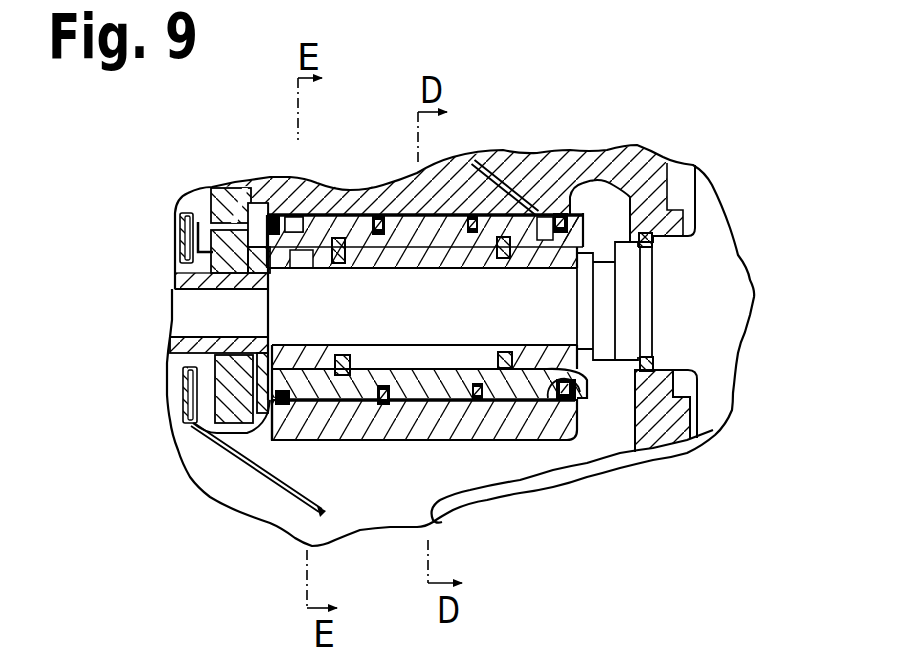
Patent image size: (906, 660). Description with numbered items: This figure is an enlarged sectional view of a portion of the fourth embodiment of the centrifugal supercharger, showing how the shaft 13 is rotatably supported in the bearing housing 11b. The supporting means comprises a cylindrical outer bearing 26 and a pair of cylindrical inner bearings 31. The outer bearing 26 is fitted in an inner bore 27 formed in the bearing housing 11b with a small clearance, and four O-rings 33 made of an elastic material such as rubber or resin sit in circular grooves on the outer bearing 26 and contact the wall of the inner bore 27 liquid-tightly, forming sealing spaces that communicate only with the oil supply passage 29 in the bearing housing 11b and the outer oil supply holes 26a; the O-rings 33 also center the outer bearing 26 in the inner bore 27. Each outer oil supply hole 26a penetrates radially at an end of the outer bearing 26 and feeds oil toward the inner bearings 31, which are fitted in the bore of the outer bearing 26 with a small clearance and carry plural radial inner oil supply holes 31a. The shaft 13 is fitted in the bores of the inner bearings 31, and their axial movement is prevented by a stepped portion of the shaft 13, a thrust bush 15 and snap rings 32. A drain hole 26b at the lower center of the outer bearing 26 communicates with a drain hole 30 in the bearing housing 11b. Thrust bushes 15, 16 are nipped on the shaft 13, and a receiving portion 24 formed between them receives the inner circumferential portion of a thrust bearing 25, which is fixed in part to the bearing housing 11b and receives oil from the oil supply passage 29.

The bearing housing 11b is at (537, 155).
The shaft 13 is at (560, 320).
The thrust bush 15 is at (224, 412).
The thrust bush 16 is at (172, 352).
The receiving portion 24 is at (181, 250).
The thrust bearing 25 is at (190, 426).
The outer bearing 26 is at (430, 208).
The outer oil supply hole 26a is at (280, 212).
The drain hole 26b is at (417, 392).
The inner bore 27 is at (583, 380).
The oil supply passage 29 is at (300, 215).
The drain hole 30 is at (468, 422).
The inner bearing 31 is at (338, 240).
The inner oil supply hole 31a is at (268, 284).
The snap ring 32 is at (342, 370).
The O-ring 33 is at (274, 408).